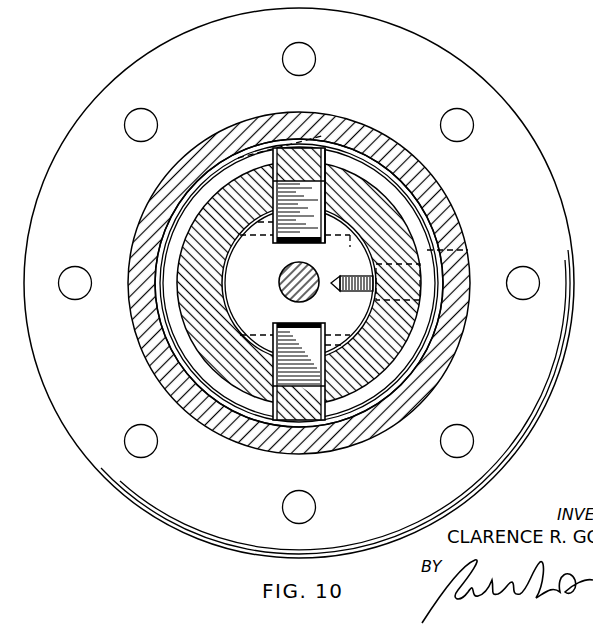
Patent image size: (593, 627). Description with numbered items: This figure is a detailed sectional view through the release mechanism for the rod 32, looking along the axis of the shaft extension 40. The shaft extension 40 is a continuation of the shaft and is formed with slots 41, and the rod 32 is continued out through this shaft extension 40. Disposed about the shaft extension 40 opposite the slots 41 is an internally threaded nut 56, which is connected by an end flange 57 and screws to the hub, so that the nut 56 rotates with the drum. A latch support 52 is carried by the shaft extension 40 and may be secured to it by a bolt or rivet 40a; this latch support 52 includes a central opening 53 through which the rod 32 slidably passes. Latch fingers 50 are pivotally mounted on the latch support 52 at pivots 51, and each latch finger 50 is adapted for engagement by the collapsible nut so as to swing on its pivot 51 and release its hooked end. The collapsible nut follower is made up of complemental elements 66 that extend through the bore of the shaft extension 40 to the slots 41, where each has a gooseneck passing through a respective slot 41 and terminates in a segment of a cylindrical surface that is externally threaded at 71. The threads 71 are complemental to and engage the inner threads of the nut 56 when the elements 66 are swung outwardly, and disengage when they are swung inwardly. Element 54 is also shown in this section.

The end flange 57 is at (68, 160).
The internally threaded nut 56 is at (153, 223).
The external threads 71 is at (338, 120).
The slots 41 is at (324, 187).
The shaft extension 40 is at (398, 229).
The bolt or rivet 40a is at (472, 256).
The pivots 51 is at (221, 428).
The latch fingers 50 is at (273, 239).
The collapsible nut follower elements 66 is at (299, 282).
The bar 54 is at (287, 213).
The rod 32 is at (279, 283).
The central opening 53 is at (281, 297).
The latch support 52 is at (328, 307).